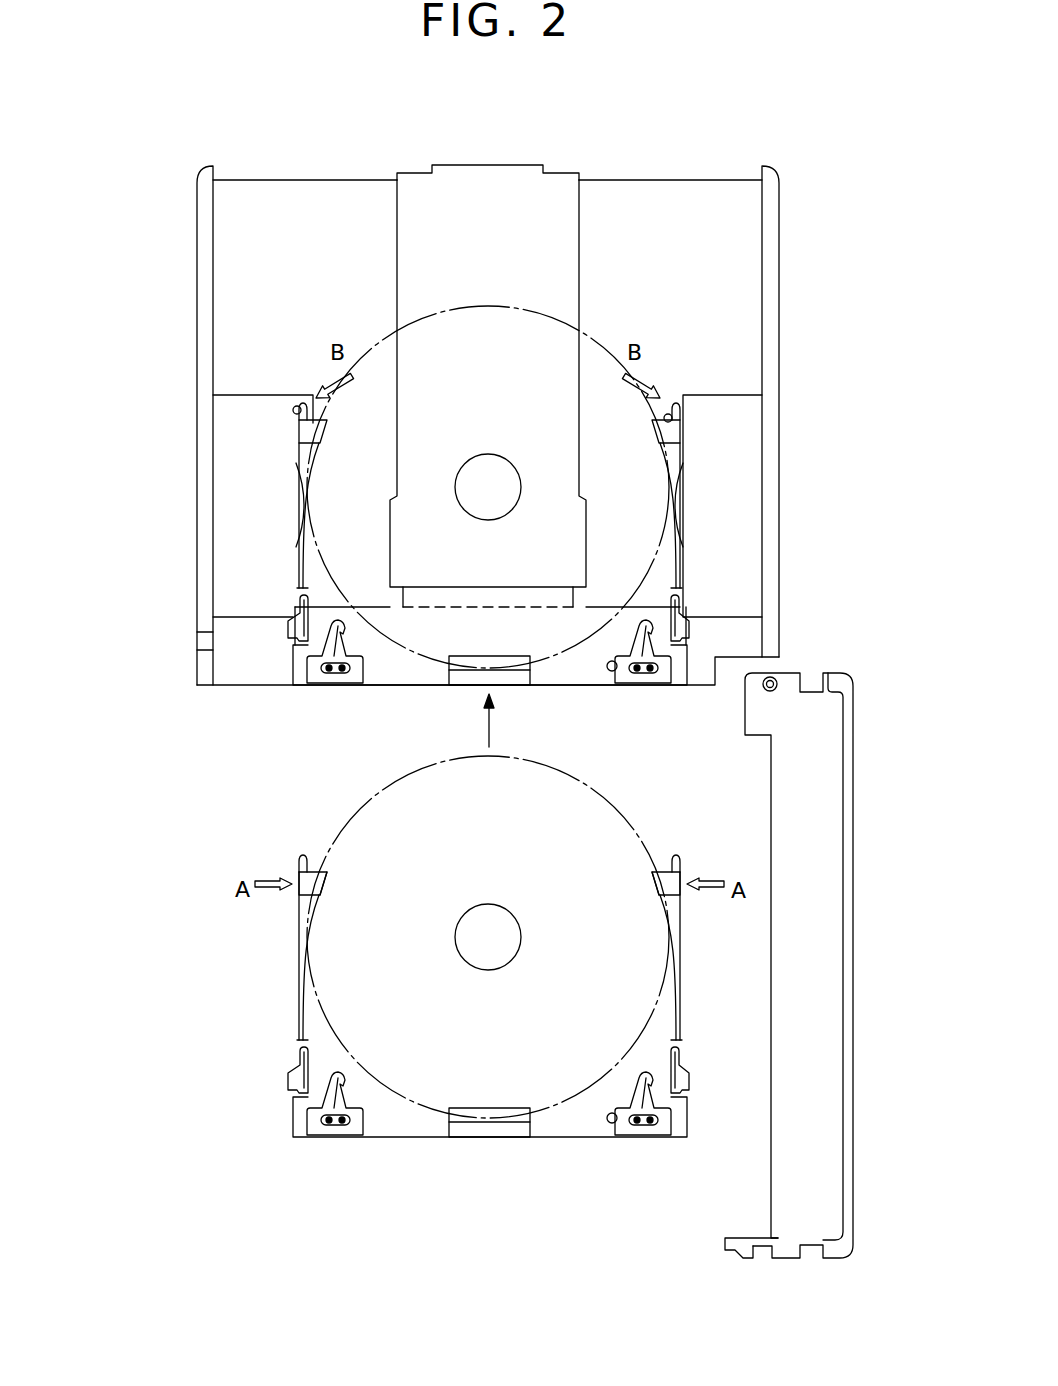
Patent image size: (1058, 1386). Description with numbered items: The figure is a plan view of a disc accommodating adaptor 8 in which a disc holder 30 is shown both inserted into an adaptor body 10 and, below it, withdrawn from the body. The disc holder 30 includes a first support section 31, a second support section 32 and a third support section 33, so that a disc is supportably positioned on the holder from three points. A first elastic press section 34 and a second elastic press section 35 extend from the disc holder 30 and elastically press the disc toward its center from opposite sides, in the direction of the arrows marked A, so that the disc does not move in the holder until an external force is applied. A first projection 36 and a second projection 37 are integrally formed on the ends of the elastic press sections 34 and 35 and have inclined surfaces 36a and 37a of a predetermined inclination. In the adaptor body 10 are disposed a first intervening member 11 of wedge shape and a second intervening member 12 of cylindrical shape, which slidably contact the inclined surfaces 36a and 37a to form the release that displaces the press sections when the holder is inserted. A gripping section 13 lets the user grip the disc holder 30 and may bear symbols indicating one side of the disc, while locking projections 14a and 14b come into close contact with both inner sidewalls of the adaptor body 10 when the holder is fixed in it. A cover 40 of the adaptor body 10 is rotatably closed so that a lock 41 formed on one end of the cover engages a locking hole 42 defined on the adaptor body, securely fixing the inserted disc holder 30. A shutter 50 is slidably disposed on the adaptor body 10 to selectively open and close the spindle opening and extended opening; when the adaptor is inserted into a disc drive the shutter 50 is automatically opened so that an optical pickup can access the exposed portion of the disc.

The disc accommodating adaptor 8 is at (72, 586).
The adaptor body 10 is at (205, 201).
The first intervening member 11 is at (297, 412).
The second intervening member 12 is at (670, 419).
The gripping section 13 is at (465, 1138).
The locking projection 14a is at (295, 1075).
The locking projection 14b is at (688, 1072).
The disc holder 30 is at (292, 1125).
The first support section 31 is at (328, 880).
The second support section 32 is at (652, 875).
The third support section 33 is at (508, 1138).
The first elastic press section 34 is at (300, 975).
The second elastic press section 35 is at (680, 975).
The first projection 36 is at (300, 862).
The inclined surface 36a is at (310, 860).
The second projection 37 is at (681, 858).
The inclined surface 37a is at (672, 862).
The cover 40 is at (809, 993).
The lock 41 is at (742, 1248).
The locking hole 42 is at (200, 648).
The shutter 50 is at (478, 173).